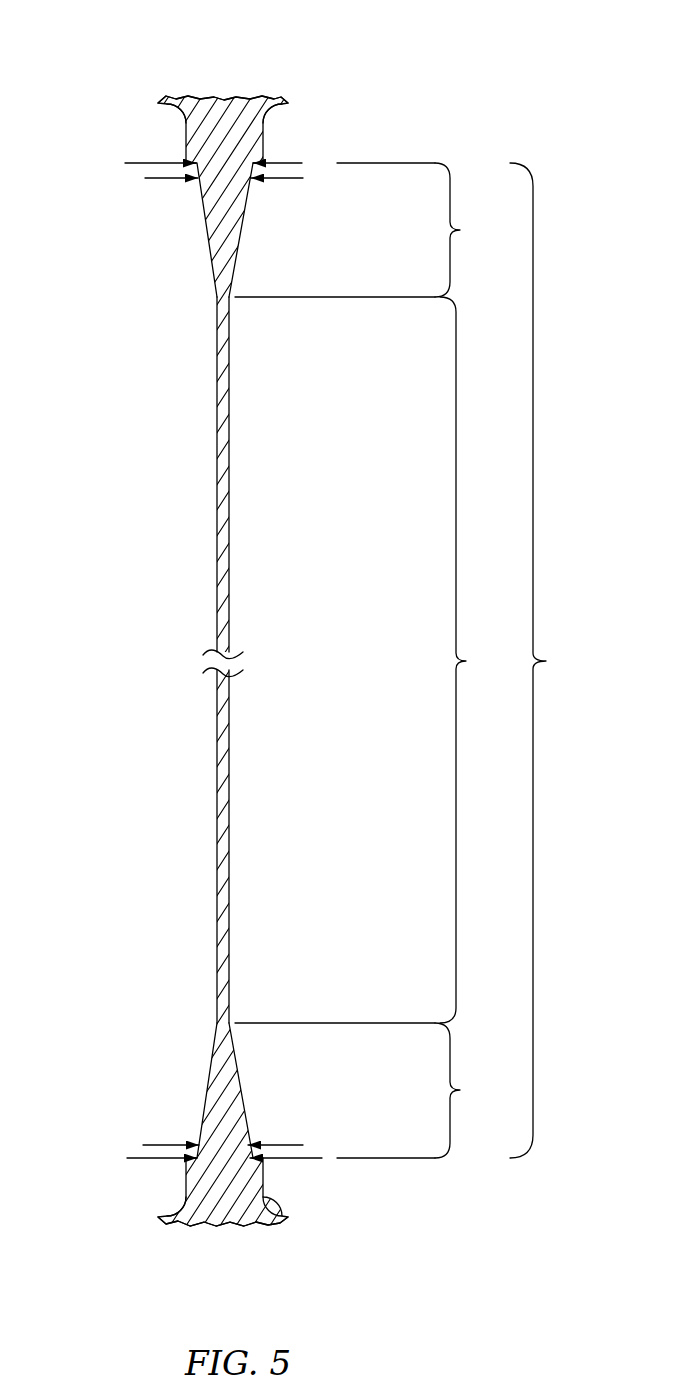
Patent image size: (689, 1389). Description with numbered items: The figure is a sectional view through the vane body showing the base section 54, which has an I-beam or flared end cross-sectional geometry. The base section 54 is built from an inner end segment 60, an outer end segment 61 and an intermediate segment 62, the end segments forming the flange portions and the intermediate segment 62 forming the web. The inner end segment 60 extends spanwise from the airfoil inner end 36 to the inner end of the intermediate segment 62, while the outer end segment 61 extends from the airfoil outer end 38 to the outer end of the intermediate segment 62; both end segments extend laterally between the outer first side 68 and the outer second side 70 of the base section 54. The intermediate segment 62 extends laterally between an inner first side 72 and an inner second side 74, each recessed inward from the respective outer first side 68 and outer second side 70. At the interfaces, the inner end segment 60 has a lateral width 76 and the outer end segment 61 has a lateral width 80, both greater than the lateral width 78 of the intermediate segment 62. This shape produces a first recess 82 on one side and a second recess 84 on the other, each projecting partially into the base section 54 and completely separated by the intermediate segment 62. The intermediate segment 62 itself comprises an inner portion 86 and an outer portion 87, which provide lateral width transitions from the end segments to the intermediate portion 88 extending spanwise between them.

The base section 54 is at (386, 72).
The airfoil inner end 36 is at (265, 1226).
The airfoil outer end 38 is at (254, 97).
The inner end segment 60 is at (137, 1219).
The outer end segment 61 is at (157, 118).
The intermediate segment 62 is at (548, 660).
The outer first side 68 is at (183, 135).
The outer second side 70 is at (282, 123).
The inner first side 72 is at (217, 782).
The inner second side 74 is at (229, 773).
The lateral width 76 is at (140, 1161).
The lateral width 78 is at (283, 180).
The lateral width 80 is at (303, 163).
The first recess 82 is at (187, 470).
The second recess 84 is at (246, 535).
The intermediate segment inner portion 86 is at (366, 1090).
The intermediate segment outer portion 87 is at (366, 230).
The intermediate segment intermediate portion 88 is at (474, 660).